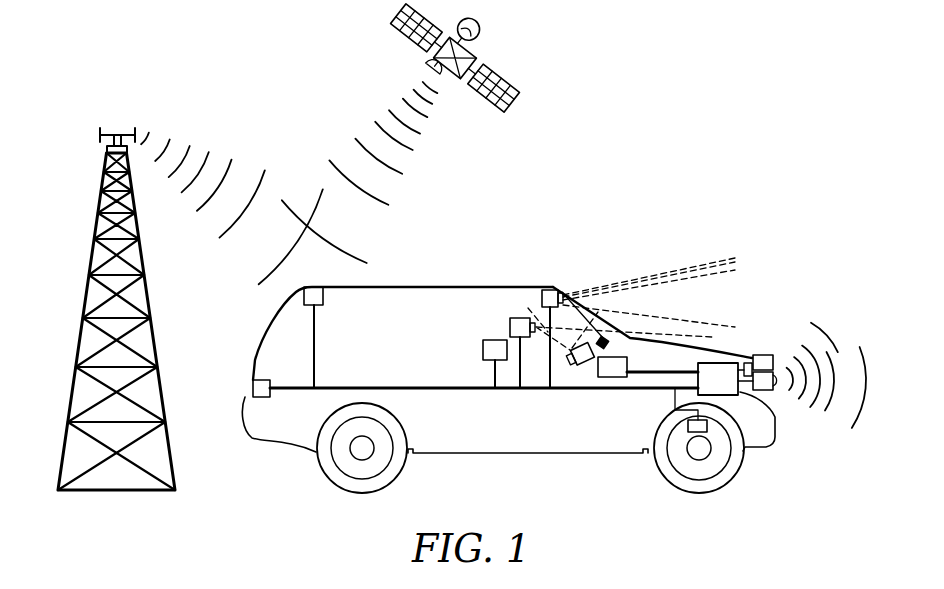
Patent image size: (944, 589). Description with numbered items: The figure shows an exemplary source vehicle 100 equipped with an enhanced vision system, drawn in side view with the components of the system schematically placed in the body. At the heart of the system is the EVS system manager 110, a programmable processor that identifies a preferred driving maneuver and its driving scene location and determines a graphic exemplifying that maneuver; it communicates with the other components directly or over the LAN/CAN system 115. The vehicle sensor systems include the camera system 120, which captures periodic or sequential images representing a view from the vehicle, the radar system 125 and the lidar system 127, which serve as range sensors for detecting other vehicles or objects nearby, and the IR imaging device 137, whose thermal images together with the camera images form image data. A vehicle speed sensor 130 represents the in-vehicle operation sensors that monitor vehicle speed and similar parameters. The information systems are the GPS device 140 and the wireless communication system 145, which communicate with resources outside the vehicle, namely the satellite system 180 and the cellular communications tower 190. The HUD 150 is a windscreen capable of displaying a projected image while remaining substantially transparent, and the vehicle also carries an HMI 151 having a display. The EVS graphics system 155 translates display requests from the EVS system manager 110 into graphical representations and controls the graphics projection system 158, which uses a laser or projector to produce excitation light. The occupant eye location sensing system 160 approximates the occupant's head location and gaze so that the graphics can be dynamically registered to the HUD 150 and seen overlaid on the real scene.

The vehicle 100 is at (535, 350).
The EVS system manager 110 is at (735, 392).
The LAN/CAN system 115 is at (347, 387).
The camera system 120 is at (553, 287).
The radar system 125 is at (776, 378).
The lidar system 127 is at (765, 355).
The vehicle speed sensor 130 is at (707, 426).
The IR imaging device 137 is at (516, 318).
The GPS device 140 is at (253, 389).
The wireless communication system 145 is at (304, 297).
The head-up display (HUD) 150 is at (623, 327).
The human machine interface (HMI) 151 is at (488, 350).
The EVS graphics system 155 is at (613, 367).
The graphics projection system 158 is at (603, 340).
The occupant eye location sensing system 160 is at (583, 364).
The satellite system 180 is at (425, 70).
The cellular communications tower 190 is at (90, 280).